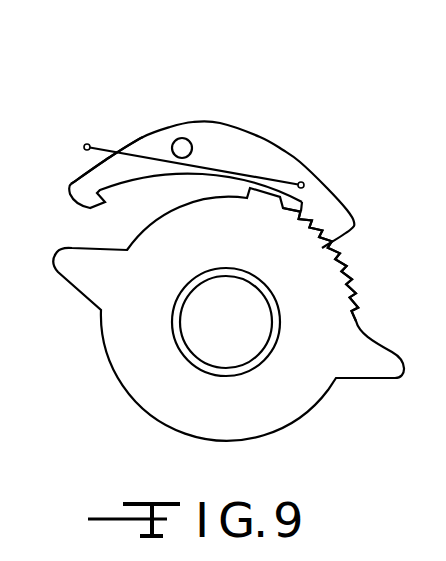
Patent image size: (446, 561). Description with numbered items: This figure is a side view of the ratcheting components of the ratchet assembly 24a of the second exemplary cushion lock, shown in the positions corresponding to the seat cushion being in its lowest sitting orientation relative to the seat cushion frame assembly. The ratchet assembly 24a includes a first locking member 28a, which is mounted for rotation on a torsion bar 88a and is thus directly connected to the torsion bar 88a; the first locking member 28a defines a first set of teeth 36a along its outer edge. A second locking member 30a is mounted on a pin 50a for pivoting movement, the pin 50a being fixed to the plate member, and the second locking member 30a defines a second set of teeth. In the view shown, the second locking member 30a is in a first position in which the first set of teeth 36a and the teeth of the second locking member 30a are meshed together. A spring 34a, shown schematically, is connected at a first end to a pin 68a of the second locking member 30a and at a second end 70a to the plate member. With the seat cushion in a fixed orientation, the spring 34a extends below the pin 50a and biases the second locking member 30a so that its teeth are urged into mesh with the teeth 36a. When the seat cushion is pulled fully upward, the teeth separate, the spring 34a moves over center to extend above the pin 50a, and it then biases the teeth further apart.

The ratchet assembly 24a is at (184, 80).
The first locking member 28a is at (150, 405).
The second locking member 30a is at (256, 148).
The spring 34a is at (105, 152).
The first set of teeth 36a is at (353, 294).
The pin 50a is at (184, 139).
The pin 68a is at (302, 182).
The second end 70a is at (84, 147).
The torsion bar 88a is at (270, 317).